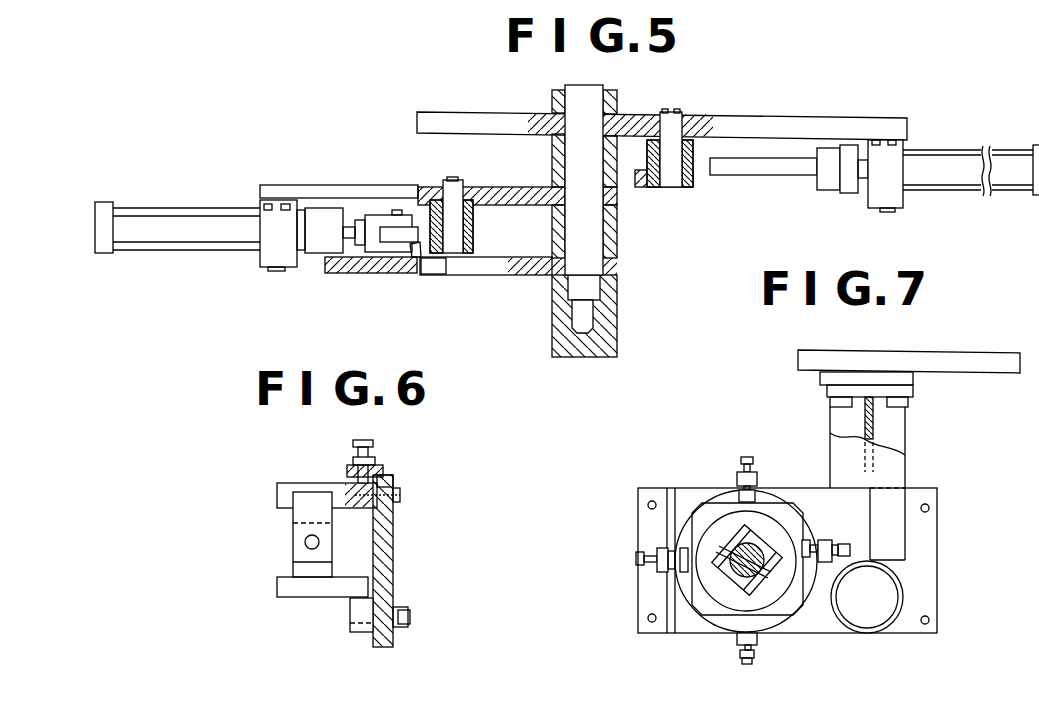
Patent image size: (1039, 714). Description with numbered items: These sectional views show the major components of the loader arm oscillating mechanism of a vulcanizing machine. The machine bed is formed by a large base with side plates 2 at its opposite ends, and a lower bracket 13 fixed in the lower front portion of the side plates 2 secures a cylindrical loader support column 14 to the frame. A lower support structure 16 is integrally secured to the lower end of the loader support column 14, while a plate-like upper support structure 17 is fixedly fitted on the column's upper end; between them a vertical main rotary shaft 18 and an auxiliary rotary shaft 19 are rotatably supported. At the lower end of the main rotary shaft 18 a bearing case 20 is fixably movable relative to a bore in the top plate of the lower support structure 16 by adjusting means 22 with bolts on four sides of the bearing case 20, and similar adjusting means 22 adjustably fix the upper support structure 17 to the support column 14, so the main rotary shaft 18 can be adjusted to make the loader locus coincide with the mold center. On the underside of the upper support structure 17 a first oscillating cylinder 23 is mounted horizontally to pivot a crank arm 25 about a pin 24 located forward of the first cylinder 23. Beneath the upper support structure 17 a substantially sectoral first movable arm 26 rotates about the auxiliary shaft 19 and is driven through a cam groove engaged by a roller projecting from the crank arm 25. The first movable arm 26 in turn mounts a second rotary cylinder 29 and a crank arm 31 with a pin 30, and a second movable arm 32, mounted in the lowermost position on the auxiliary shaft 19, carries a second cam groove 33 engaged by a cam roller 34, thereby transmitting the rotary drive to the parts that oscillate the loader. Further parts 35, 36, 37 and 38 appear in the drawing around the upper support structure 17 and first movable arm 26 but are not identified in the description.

In FIG. 7, the side plates 2 is at (988, 350).
In FIG. 7, the lower bracket 13 is at (905, 462).
In FIG. 7, the loader support column 14 is at (867, 634).
In FIG. 7, the lower support structure 16 is at (684, 634).
In FIG. 5, the upper support structure 17 is at (766, 119).
In FIG. 6, the upper support structure 17 is at (300, 484).
In FIG. 5, the main rotary shaft 18 is at (606, 330).
In FIG. 7, the main rotary shaft 18 is at (746, 590).
In FIG. 5, the auxiliary rotary shaft 19 is at (588, 110).
In FIG. 7, the bearing case 20 is at (787, 514).
In FIG. 7, the adjusting means 22 is at (752, 456).
In FIG. 5, the first oscillating cylinder 23 is at (1013, 165).
In FIG. 5, the pin 24 is at (672, 190).
In FIG. 5, the crank arm 25 is at (688, 188).
In FIG. 5, the first movable arm 26 is at (361, 185).
In FIG. 6, the first movable arm 26 is at (307, 598).
In FIG. 5, the second rotary cylinder 29 is at (203, 222).
In FIG. 5, the pin 30 is at (466, 197).
In FIG. 5, the crank arm 31 is at (411, 256).
In FIG. 5, the second movable arm 32 is at (360, 274).
In FIG. 5, the second cam groove 33 is at (490, 276).
In FIG. 5, the cam roller 34 is at (437, 275).
In FIG. 6, the slide block 35 is at (293, 558).
In FIG. 6, the bolt 36 is at (378, 456).
In FIG. 6, the side plate 37 is at (394, 548).
In FIG. 6, the stop block 38 is at (361, 633).